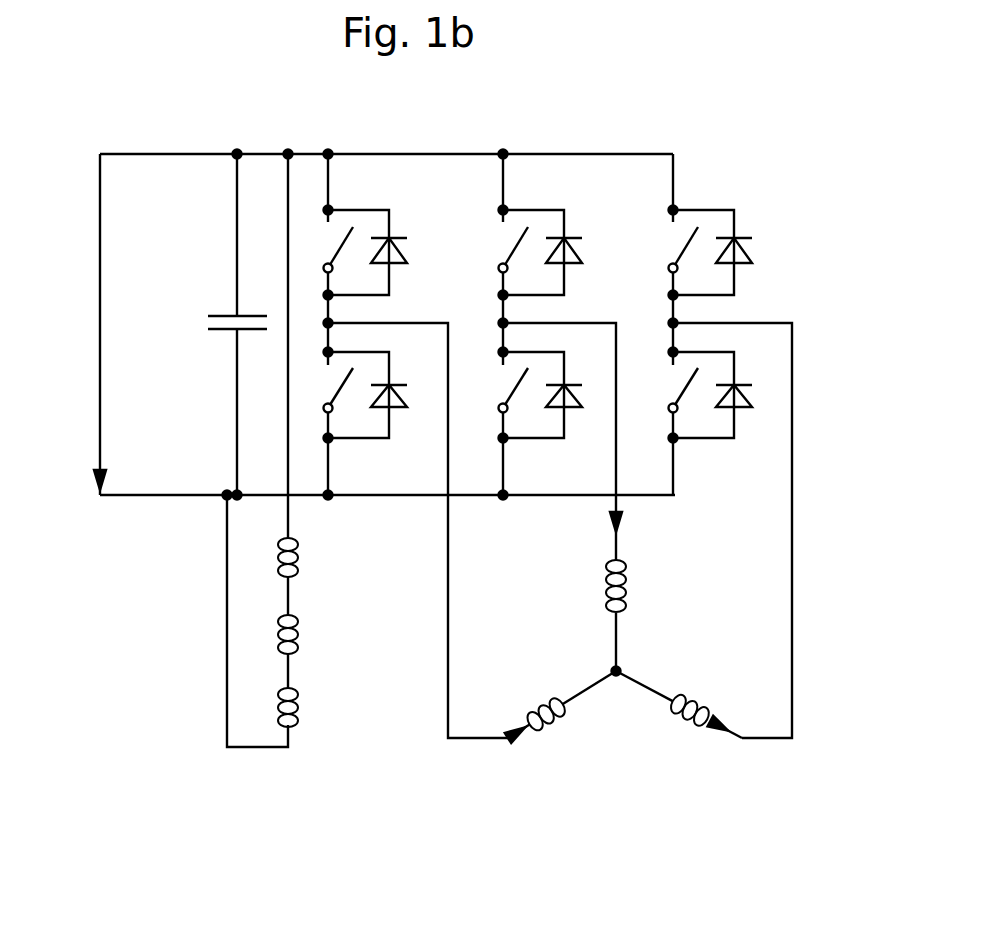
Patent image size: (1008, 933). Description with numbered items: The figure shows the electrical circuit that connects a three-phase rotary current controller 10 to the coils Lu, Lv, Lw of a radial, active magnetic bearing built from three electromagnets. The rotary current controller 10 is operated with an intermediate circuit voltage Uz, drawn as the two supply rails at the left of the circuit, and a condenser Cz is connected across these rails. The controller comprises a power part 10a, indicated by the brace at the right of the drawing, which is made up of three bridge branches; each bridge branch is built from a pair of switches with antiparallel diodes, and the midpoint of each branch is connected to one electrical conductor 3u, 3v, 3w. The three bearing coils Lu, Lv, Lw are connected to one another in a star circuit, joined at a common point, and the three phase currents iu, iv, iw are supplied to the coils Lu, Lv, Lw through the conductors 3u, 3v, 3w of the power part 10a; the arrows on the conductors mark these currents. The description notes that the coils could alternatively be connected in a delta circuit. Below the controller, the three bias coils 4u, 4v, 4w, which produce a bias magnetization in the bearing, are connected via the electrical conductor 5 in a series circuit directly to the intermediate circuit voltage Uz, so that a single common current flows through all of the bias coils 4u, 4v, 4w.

The three-phase rotary current controller 10 is at (618, 325).
The power part 10a is at (828, 140).
The electrical conductor 3u is at (613, 456).
The electrical conductor 3v is at (795, 567).
The electrical conductor 3w is at (447, 590).
The coil 4u is at (298, 633).
The coil 4v is at (298, 560).
The coil 4w is at (300, 714).
The electrical conductor 5 is at (299, 491).
The condenser Cz is at (218, 325).
The intermediate circuit voltage Uz is at (80, 324).
The coil Lu is at (630, 586).
The coil Lv is at (697, 722).
The coil Lw is at (537, 708).
The phase current iu is at (643, 529).
The phase current iv is at (741, 750).
The phase current iw is at (505, 756).